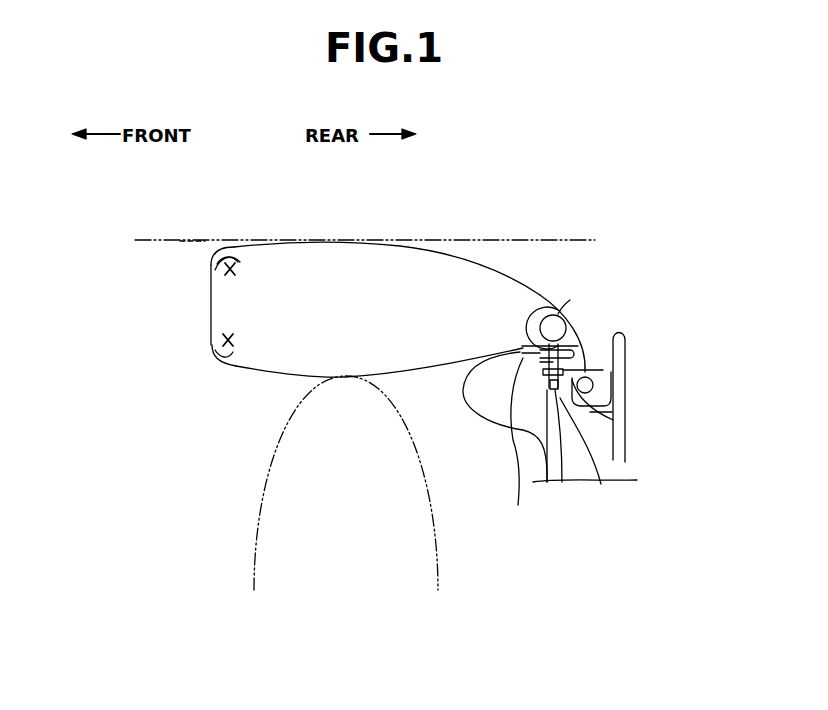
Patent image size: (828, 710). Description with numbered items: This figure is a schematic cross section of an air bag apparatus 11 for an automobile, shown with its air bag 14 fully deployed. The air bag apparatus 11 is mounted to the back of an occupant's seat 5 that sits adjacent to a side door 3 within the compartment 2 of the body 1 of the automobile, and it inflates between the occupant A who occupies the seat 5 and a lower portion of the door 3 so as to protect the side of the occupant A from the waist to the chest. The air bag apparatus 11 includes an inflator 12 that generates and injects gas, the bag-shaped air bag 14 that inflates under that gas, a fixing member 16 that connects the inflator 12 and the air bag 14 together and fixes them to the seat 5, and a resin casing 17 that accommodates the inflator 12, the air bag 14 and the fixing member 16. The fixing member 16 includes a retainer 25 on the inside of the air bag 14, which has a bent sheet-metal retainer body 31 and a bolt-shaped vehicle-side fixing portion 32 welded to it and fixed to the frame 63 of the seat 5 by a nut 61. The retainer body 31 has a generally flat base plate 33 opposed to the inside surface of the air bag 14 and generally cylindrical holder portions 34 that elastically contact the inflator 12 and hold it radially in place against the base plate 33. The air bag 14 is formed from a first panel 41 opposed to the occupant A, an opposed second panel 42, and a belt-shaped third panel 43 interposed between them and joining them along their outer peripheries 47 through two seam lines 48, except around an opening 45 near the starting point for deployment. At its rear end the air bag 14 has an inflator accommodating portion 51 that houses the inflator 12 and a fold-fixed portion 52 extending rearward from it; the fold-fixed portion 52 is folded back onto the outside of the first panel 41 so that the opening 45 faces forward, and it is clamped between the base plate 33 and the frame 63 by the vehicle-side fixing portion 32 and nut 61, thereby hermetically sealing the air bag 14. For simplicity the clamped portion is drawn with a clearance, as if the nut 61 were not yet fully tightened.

The body 1 is at (158, 241).
The compartment 2 is at (179, 291).
The side door 3 is at (180, 241).
The occupant's seat 5 is at (627, 460).
The air bag apparatus 11 is at (403, 244).
The inflator 12 is at (603, 318).
The air bag 14 is at (428, 247).
The fixing member 16 is at (528, 310).
The casing 17 is at (622, 331).
The retainer 25 is at (529, 316).
The retainer body 31 is at (528, 329).
The vehicle-side fixing portion 32 is at (601, 485).
The base plate 33 is at (518, 358).
The holder portion 34 is at (543, 309).
The first panel 41 is at (268, 376).
The second panel 42 is at (231, 262).
The third panel 43 is at (209, 303).
The opening 45 is at (516, 446).
The outer periphery 47 is at (234, 270).
The seam line 48 is at (240, 262).
The inflator accommodating portion 51 is at (570, 300).
The fold-fixed portion 52 is at (625, 423).
The nut 61 is at (561, 485).
The frame 63 is at (603, 368).
The occupant A is at (270, 462).